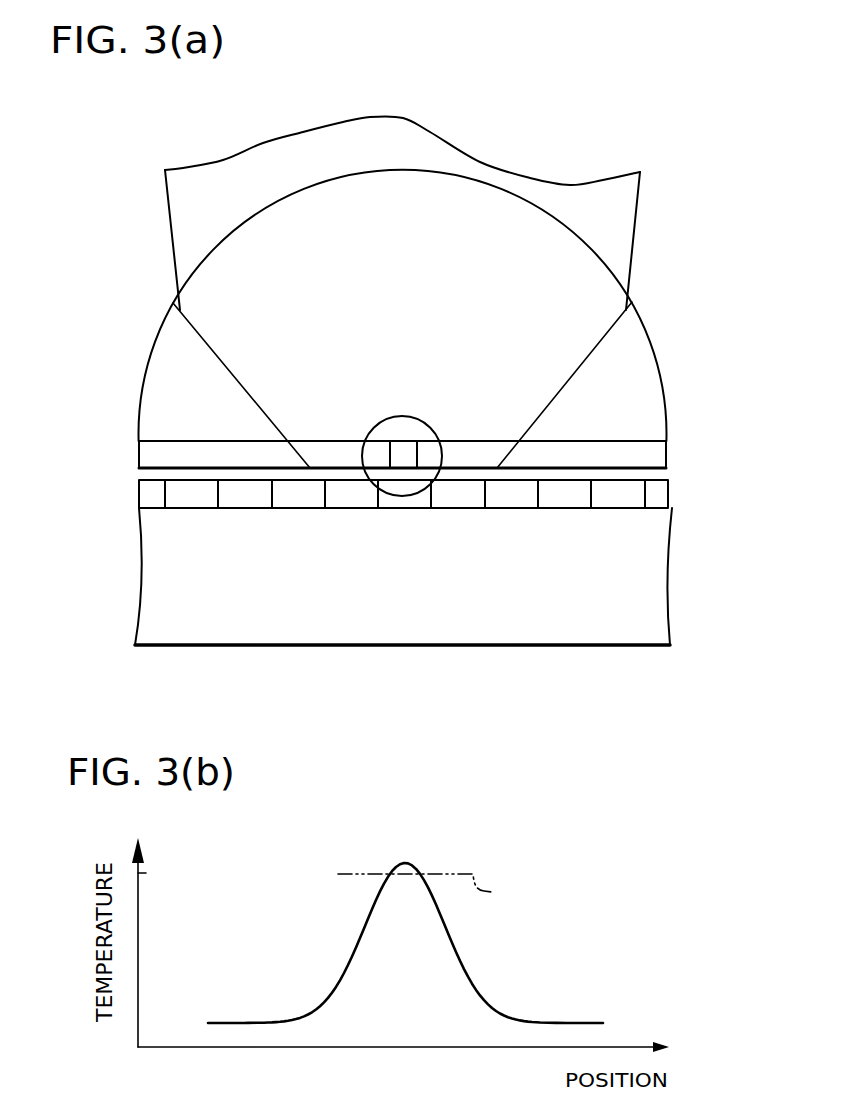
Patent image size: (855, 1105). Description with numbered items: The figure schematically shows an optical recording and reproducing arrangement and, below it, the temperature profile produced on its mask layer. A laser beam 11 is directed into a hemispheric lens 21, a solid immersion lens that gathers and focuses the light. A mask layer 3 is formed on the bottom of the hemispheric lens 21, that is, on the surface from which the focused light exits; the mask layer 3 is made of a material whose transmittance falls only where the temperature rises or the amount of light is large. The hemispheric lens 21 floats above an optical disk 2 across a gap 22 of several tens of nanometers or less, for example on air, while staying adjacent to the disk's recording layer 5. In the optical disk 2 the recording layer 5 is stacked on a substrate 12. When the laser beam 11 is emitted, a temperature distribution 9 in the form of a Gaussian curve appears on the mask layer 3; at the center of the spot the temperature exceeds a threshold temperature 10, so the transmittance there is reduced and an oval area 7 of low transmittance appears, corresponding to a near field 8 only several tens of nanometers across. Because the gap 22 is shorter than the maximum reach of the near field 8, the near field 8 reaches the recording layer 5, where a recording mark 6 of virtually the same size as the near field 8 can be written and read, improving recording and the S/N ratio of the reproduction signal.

The optical disk 2 is at (698, 636).
The mask layer 3 is at (655, 453).
The recording layer 5 is at (660, 498).
The recording mark 6 is at (305, 498).
The oval area 7 is at (395, 457).
The near field 8 is at (442, 472).
The temperature distribution 9 is at (582, 1022).
The threshold temperature 10 is at (492, 892).
The laser beam 11 is at (628, 231).
The substrate 12 is at (652, 572).
The hemispheric lens (SIL) 21 is at (643, 370).
The gap 22 is at (663, 475).